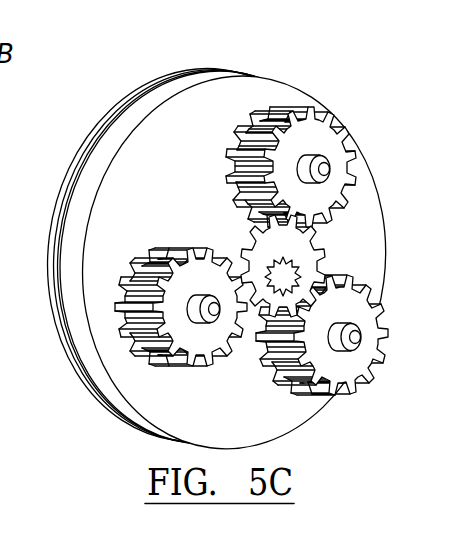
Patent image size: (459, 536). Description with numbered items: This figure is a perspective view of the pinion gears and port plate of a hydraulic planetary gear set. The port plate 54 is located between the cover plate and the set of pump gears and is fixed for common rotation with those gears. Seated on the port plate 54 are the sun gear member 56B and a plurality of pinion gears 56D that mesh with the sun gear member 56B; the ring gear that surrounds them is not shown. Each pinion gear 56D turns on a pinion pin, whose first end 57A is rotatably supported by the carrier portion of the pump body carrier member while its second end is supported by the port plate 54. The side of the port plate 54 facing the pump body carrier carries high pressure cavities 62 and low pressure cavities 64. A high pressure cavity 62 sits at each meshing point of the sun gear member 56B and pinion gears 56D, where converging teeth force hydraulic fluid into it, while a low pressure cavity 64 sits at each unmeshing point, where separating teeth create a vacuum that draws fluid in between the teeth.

The port plate 54 is at (183, 130).
The sun gear member 56B is at (307, 253).
The pinion gears 56D is at (318, 140).
The first end of pinion pin 57A is at (325, 169).
The high pressure cavities 62 is at (230, 110).
The low pressure cavities 64 is at (128, 338).